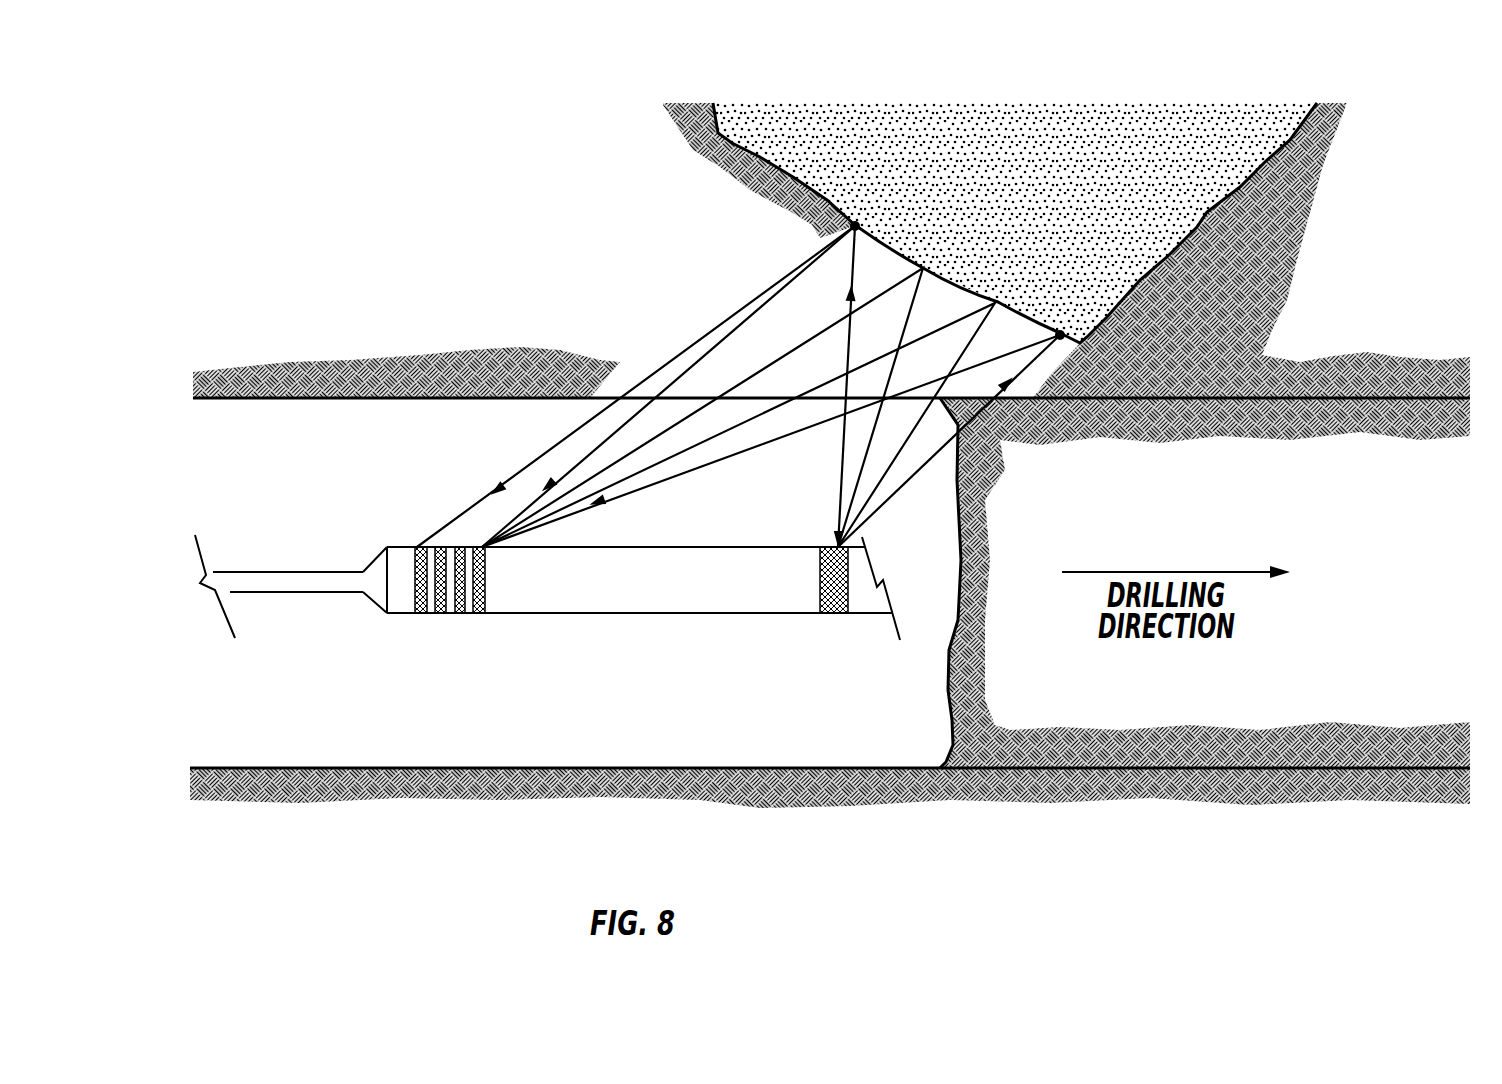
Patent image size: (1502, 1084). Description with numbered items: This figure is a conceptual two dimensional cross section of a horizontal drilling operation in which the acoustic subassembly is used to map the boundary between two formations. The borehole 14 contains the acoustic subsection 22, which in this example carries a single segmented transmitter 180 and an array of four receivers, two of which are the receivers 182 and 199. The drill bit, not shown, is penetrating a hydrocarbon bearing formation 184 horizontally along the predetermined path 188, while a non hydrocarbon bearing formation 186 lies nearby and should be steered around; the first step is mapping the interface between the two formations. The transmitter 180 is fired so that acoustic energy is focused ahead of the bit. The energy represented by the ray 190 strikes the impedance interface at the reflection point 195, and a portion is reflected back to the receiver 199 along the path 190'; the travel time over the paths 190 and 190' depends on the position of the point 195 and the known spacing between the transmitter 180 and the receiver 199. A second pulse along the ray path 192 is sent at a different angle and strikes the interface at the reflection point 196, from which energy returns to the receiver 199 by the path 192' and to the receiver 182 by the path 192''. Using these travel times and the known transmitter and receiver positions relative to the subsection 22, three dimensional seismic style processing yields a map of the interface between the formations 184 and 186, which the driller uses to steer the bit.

The borehole 14 is at (697, 768).
The acoustic subsection 22 is at (547, 620).
The transmitter 180 is at (832, 613).
The receiver 182 is at (423, 617).
The hydrocarbon bearing formation 184 is at (1420, 358).
The non hydrocarbon bearing formation 186 is at (1083, 201).
The predetermined path 188 is at (1200, 735).
The ray 190 is at (949, 451).
The path 190' is at (771, 441).
The ray path 192 is at (802, 386).
The ray path 192' is at (636, 386).
The ray path 192'' is at (668, 386).
The reflection point 195 is at (1058, 330).
The reflection point 196 is at (862, 222).
The receiver 199 is at (476, 617).